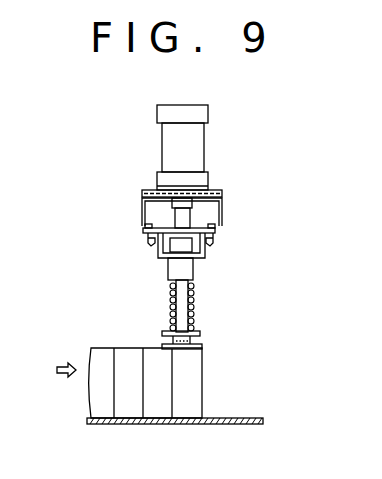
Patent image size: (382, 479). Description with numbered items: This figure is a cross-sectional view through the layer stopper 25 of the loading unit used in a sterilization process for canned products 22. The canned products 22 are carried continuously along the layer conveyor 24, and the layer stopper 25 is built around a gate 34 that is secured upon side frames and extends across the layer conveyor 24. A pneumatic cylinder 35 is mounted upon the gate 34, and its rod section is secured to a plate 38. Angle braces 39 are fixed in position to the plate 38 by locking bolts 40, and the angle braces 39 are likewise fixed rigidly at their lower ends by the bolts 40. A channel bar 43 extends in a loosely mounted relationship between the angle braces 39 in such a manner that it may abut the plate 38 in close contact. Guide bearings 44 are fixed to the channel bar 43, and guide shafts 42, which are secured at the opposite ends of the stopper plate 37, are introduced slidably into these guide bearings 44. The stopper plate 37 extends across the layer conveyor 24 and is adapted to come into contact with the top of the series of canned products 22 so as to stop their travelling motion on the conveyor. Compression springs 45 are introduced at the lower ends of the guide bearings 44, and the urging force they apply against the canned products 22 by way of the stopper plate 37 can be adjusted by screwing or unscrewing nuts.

The canned products 22 is at (193, 400).
The layer conveyor 24 is at (257, 417).
The layer stopper 25 is at (228, 197).
The gate 34 is at (142, 208).
The pneumatic cylinder 35 is at (164, 158).
The stopper plate 37 is at (202, 334).
The plate 38 is at (145, 231).
The angle braces 39 is at (158, 251).
The locking bolts 40 is at (218, 229).
The guide shafts 42 is at (185, 315).
The channel bar 43 is at (165, 262).
The guide bearings 44 is at (168, 278).
The compression springs 45 is at (172, 322).